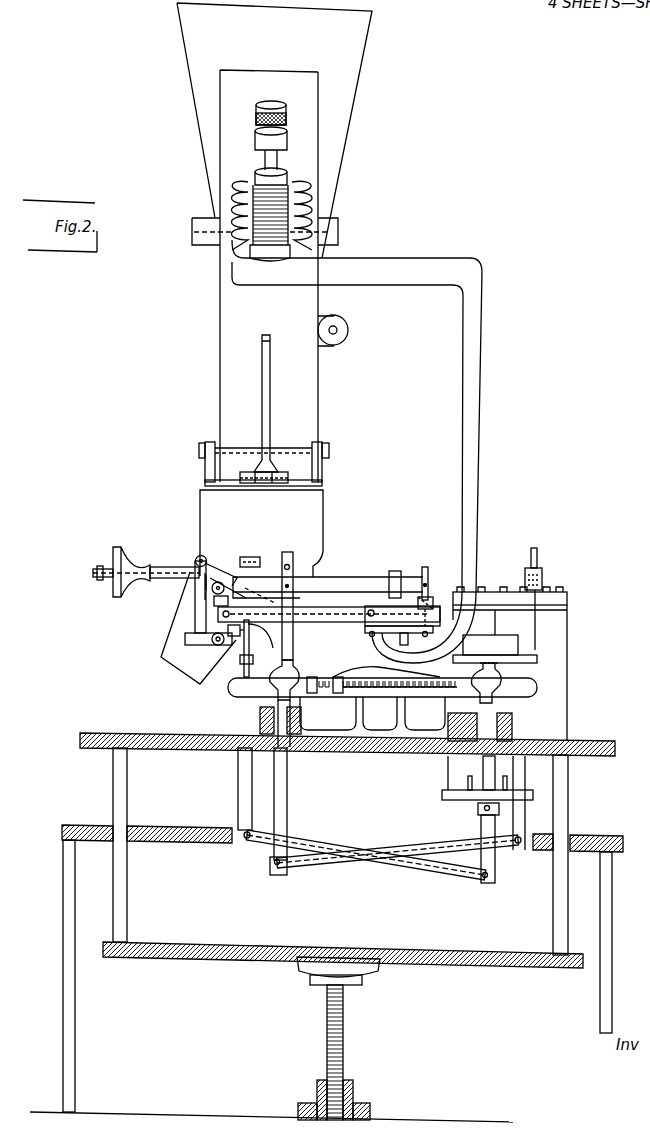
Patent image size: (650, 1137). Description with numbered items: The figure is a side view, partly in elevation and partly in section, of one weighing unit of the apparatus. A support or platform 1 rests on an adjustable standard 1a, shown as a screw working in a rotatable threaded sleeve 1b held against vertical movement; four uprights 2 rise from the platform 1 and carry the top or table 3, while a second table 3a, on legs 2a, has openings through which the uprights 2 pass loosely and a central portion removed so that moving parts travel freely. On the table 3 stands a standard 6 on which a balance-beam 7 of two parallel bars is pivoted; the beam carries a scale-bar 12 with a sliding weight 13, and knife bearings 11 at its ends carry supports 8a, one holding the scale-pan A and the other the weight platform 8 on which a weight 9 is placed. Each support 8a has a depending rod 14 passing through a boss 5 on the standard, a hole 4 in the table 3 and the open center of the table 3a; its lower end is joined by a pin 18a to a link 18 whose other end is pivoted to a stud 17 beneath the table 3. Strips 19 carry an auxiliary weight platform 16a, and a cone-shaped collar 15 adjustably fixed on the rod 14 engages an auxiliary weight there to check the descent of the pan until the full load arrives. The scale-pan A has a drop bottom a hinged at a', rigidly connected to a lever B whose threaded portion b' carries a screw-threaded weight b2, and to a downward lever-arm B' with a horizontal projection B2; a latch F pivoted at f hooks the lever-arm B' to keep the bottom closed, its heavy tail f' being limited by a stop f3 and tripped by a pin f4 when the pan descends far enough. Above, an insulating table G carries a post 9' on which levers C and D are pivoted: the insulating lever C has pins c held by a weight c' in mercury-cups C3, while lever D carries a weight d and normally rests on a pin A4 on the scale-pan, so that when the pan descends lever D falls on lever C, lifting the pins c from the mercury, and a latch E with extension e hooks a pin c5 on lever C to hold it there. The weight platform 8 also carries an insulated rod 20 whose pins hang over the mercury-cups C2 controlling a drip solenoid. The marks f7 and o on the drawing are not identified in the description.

The scale-pan A is at (323, 524).
The screw-threaded weight b2 is at (133, 549).
The screw-threaded portion b' is at (91, 575).
The lever B is at (174, 560).
The hinge a' is at (188, 541).
The lever D is at (225, 569).
The extension e is at (203, 597).
The latch F is at (205, 654).
The pivot f is at (214, 654).
The lever-arm B' is at (170, 628).
The horizontal projection B2 is at (200, 600).
The pin A4 is at (204, 586).
The weight d is at (250, 557).
The latch E is at (256, 586).
The contact pins c is at (312, 590).
The drop bottom a is at (239, 591).
The pin c5 is at (234, 610).
The post 9' is at (289, 595).
The table G is at (330, 619).
The weight c' is at (398, 572).
The lever C is at (431, 573).
The mercury-cups C3 is at (432, 598).
The mercury-cups C2 is at (543, 574).
The weight 9 is at (425, 644).
The tail-portion f' is at (247, 648).
The stop f3 is at (260, 632).
The pin f4 is at (215, 684).
The arm f7 is at (244, 672).
The balance-beam 7 is at (534, 690).
The sliding weight 13 is at (338, 677).
The scale-bar 12 is at (435, 689).
The hump o is at (384, 675).
The support 8a is at (270, 688).
The bosses 5 is at (470, 716).
The standard 6 is at (380, 716).
The knife bearings 11 is at (290, 701).
The insulated rod 20 is at (565, 625).
The weight platform 8 is at (495, 649).
The holes 4 is at (522, 736).
The table 3 is at (84, 736).
The uprights 2 is at (113, 892).
The studs 17 is at (232, 789).
The rod 14 is at (288, 767).
The strips 19 is at (447, 772).
The auxiliary weight platform 16a is at (480, 814).
The cone-shaped collar 15 is at (500, 810).
The table 3a is at (152, 830).
The link 18 is at (437, 870).
The pin 18a is at (270, 865).
The support 1 is at (343, 947).
The legs 2a is at (337, 976).
The adjustable standard 1a is at (348, 1043).
The threaded sleeve 1b is at (358, 1095).